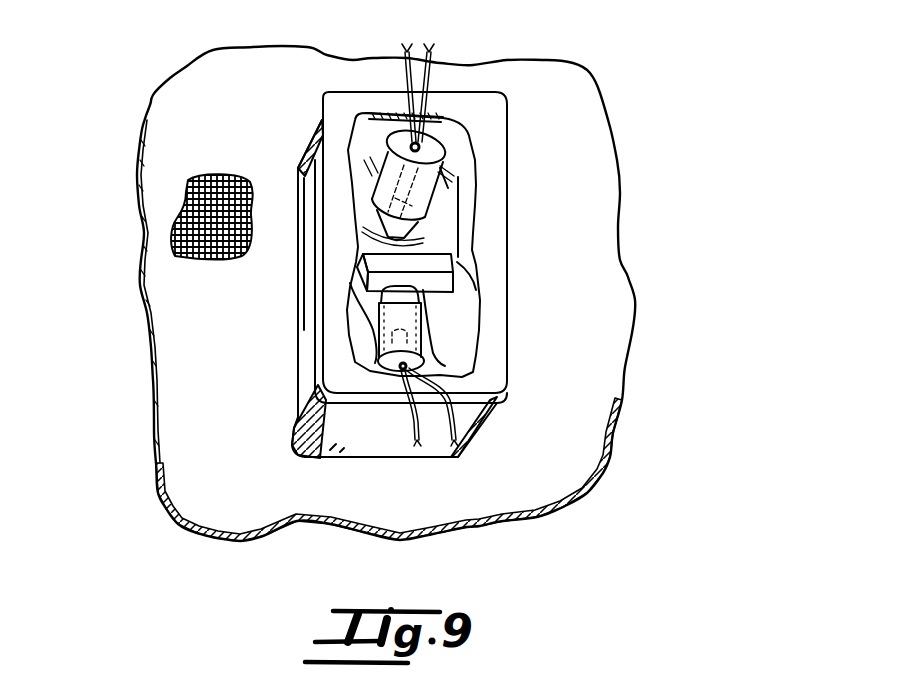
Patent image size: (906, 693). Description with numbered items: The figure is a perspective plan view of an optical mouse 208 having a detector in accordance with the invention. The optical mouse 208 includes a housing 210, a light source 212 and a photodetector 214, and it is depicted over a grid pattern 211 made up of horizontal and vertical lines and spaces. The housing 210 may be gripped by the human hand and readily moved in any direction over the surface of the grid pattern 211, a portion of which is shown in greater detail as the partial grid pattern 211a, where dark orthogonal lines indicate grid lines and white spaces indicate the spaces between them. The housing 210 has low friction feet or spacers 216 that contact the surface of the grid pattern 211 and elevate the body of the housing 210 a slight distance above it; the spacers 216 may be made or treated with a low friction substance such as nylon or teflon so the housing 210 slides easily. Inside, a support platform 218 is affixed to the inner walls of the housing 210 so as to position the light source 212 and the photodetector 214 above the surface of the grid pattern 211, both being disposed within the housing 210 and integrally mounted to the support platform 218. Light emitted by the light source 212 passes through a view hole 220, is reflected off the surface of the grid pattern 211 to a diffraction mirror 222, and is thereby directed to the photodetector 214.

The optical mouse 208 is at (396, 283).
The housing 210 is at (488, 368).
The grid pattern 211 is at (160, 392).
The partial grid pattern 211a is at (176, 244).
The light source 212 is at (435, 136).
The photodetector 214 is at (410, 366).
The spacers 216 is at (293, 427).
The support platform 218 is at (467, 197).
The view hole 220 is at (428, 243).
The diffraction mirror 222 is at (432, 283).